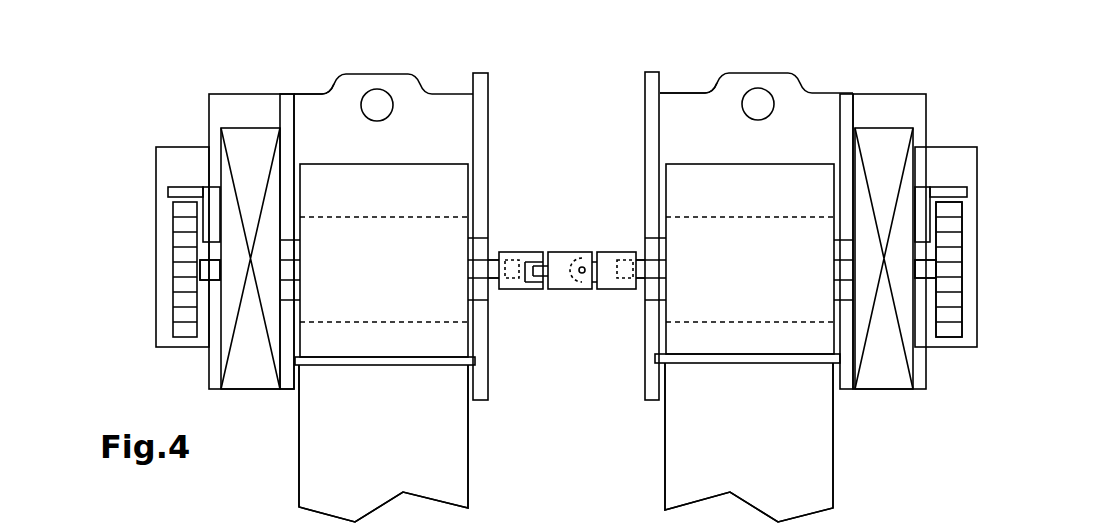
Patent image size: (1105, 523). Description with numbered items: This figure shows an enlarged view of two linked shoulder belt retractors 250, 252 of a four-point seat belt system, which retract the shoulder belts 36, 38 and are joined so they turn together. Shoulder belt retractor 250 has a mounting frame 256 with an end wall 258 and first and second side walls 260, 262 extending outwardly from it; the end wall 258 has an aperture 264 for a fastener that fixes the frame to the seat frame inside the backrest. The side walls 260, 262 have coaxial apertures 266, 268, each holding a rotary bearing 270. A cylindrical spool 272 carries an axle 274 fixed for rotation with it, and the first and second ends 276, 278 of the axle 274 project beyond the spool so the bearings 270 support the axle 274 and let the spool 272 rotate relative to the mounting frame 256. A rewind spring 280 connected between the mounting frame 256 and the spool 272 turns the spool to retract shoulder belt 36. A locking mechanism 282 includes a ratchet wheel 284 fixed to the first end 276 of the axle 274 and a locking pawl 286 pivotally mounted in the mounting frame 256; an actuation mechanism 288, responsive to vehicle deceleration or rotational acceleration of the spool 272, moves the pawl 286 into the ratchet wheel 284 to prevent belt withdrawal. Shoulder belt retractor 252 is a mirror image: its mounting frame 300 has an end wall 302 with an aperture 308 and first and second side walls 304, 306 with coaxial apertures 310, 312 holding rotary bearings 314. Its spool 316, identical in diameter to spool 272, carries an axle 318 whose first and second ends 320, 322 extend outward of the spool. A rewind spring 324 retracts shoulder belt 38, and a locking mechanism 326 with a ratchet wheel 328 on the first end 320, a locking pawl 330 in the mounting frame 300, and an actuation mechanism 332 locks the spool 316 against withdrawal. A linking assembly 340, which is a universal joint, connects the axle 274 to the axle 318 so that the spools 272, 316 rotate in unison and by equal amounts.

The shoulder belt 36 is at (792, 447).
The shoulder belt 38 is at (338, 423).
The shoulder belt retractor 250 is at (894, 86).
The shoulder belt retractor 252 is at (317, 84).
The mounting frame 256 is at (694, 121).
The end wall 258 is at (793, 110).
The first side wall 260 is at (848, 102).
The second side wall 262 is at (655, 130).
The aperture 264 is at (758, 94).
The aperture 266 is at (843, 300).
The aperture 268 is at (652, 298).
The rotary bearing 270 is at (653, 248).
The spool 272 is at (740, 324).
The axle 274 is at (925, 279).
The first end 276 is at (925, 270).
The second end 278 is at (642, 276).
The rewind spring 280 is at (886, 381).
The locking mechanism 282 is at (966, 237).
The ratchet wheel 284 is at (952, 298).
The locking pawl 286 is at (957, 190).
The actuation mechanism 288 is at (922, 203).
The mounting frame 300 is at (408, 125).
The end wall 302 is at (445, 120).
The first side wall 304 is at (287, 105).
The second side wall 306 is at (485, 112).
The aperture 308 is at (378, 96).
The aperture 310 is at (285, 300).
The aperture 312 is at (483, 300).
The rotary bearing 314 is at (285, 287).
The spool 316 is at (377, 324).
The axle 318 is at (210, 278).
The first end 320 is at (207, 270).
The second end 322 is at (492, 257).
The rewind spring 324 is at (250, 151).
The locking mechanism 326 is at (167, 285).
The ratchet wheel 328 is at (185, 228).
The locking pawl 330 is at (185, 188).
The actuation mechanism 332 is at (213, 200).
The linking assembly 340 is at (563, 298).